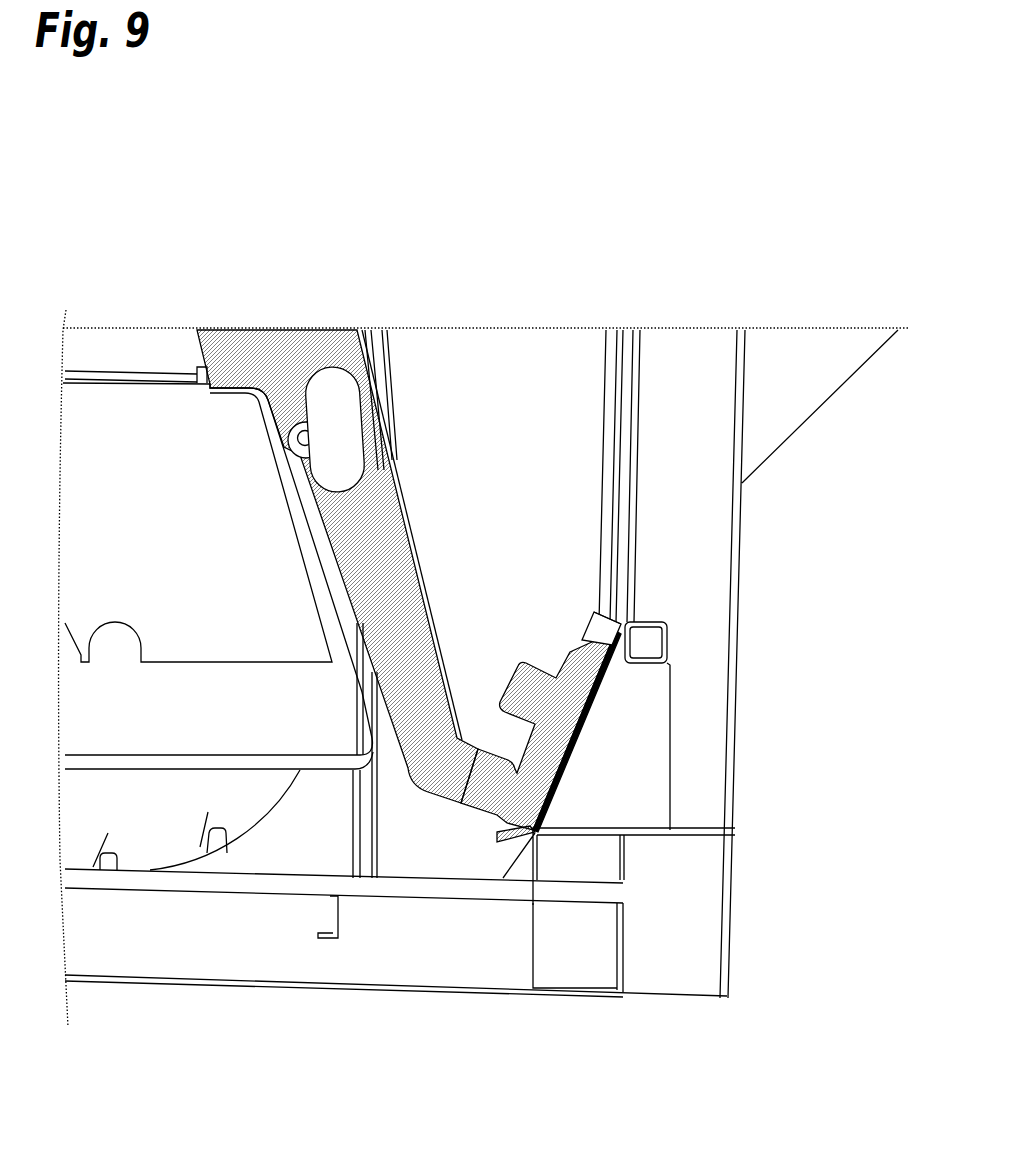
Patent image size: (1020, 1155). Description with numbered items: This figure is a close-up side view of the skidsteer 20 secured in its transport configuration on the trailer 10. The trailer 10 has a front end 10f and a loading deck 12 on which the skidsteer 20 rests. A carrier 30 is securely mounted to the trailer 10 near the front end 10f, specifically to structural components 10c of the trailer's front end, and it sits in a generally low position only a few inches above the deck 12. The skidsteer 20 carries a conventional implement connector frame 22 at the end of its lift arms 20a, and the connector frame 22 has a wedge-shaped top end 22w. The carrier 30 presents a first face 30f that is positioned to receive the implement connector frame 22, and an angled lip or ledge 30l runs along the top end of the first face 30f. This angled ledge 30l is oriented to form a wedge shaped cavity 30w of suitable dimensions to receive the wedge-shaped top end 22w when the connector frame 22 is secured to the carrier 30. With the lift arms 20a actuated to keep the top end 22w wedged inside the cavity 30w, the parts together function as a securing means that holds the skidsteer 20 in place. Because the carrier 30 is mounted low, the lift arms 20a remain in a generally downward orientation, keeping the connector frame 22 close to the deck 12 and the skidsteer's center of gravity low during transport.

The trailer 10 is at (612, 302).
The structural components 10c is at (676, 647).
The front end 10f is at (783, 1037).
The loading deck 12 is at (200, 910).
The skidsteer 20 is at (115, 410).
The lift arms 20a is at (378, 518).
The implement connector frame 22 is at (503, 628).
The wedge-shaped top end 22w is at (582, 641).
The carrier member 30 is at (597, 707).
The first face 30f is at (500, 822).
The angled lip or ledge 30l is at (593, 613).
The wedge shaped cavity 30w is at (608, 642).